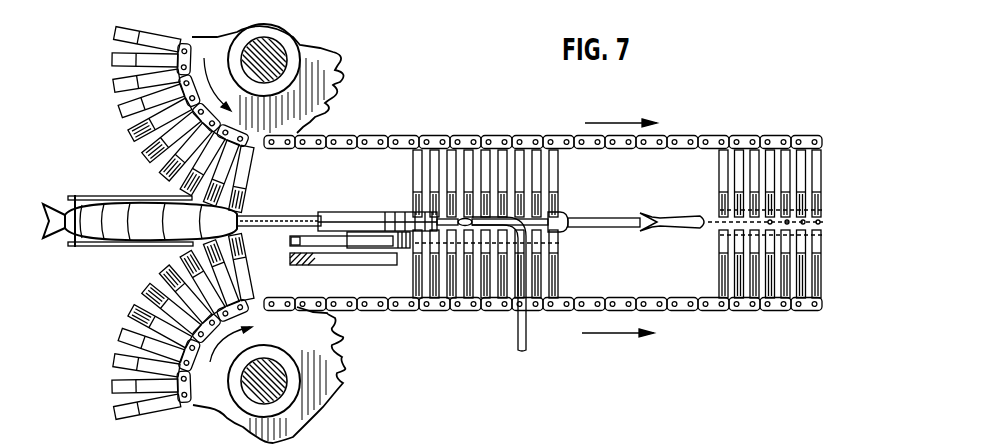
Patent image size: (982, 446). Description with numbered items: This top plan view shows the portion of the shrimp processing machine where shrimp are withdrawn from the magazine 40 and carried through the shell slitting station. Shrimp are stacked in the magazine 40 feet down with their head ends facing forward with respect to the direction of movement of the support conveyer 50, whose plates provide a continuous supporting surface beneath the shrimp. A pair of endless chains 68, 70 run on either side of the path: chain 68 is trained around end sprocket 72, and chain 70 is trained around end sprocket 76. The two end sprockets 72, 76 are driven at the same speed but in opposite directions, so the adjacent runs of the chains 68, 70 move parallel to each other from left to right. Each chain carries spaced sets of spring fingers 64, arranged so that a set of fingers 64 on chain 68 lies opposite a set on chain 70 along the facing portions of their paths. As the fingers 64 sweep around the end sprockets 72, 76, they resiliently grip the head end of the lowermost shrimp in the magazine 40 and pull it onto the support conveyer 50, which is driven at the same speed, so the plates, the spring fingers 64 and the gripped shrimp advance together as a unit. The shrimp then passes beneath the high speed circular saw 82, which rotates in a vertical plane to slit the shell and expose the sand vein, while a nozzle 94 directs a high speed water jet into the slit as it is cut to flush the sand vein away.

The magazine 40 is at (97, 246).
The support conveyer 50 is at (283, 208).
The spring fingers 64 is at (127, 124).
The chain 68 is at (441, 310).
The chain 70 is at (408, 138).
The end sprocket 72 is at (331, 397).
The end sprocket 76 is at (347, 72).
The circular saw 82 is at (358, 212).
The nozzle 94 is at (516, 325).